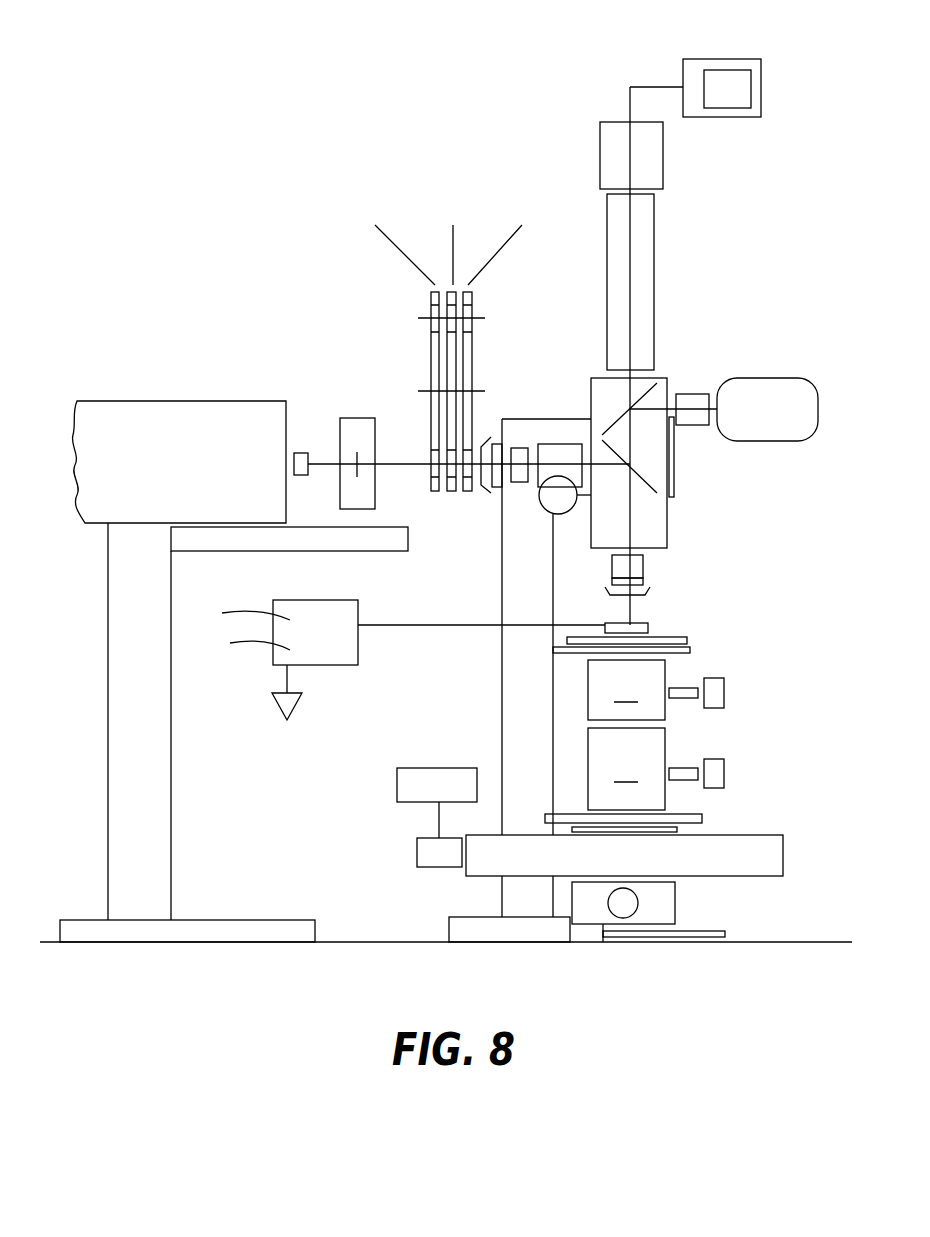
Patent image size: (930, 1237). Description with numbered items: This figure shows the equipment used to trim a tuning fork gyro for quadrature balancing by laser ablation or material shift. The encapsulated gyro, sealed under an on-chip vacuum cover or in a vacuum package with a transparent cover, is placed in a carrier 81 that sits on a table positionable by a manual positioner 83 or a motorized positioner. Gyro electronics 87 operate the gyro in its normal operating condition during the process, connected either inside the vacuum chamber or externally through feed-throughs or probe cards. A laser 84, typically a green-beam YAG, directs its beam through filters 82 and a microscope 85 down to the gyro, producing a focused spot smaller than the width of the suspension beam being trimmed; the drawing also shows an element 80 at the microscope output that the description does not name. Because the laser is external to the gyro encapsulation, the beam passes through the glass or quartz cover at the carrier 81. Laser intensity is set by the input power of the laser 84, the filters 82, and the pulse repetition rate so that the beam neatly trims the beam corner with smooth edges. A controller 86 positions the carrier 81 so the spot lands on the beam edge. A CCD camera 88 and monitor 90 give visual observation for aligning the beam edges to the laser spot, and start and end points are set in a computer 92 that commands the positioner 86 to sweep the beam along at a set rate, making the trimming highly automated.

The objective lens 80 is at (630, 620).
The carrier 81 is at (648, 628).
The filters 82 is at (473, 343).
The manual positioner 83 is at (656, 735).
The laser 84 is at (218, 401).
The microscope 85 is at (667, 517).
The controller 86 is at (721, 872).
The gyro electronics 87 is at (313, 665).
The CCD camera 88 is at (663, 153).
The monitor 90 is at (761, 77).
The computer 92 is at (410, 803).